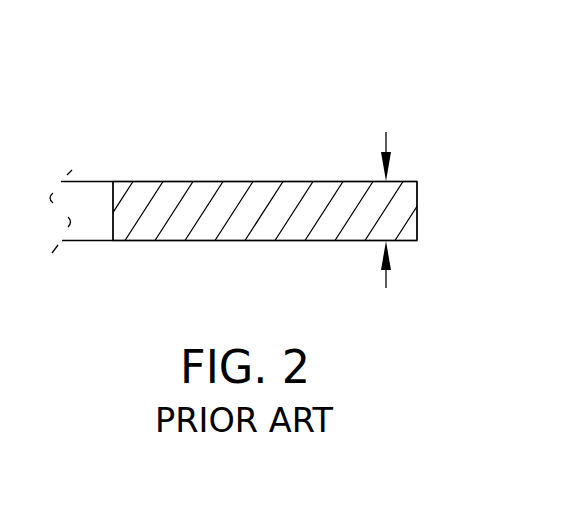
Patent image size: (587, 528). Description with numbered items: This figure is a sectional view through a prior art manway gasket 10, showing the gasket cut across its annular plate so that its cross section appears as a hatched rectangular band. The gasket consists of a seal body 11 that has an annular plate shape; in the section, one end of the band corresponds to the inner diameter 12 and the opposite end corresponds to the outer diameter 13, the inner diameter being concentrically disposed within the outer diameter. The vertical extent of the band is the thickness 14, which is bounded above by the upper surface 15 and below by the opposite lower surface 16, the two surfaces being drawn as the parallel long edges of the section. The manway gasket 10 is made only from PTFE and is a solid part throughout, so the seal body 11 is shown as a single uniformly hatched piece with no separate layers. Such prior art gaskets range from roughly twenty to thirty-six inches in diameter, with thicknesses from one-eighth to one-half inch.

The manway gasket 10 is at (380, 98).
The seal body 11 is at (283, 197).
The inner diameter 12 is at (113, 210).
The outer diameter 13 is at (417, 207).
The thickness 14 is at (384, 227).
The upper surface 15 is at (189, 181).
The lower surface 16 is at (265, 240).